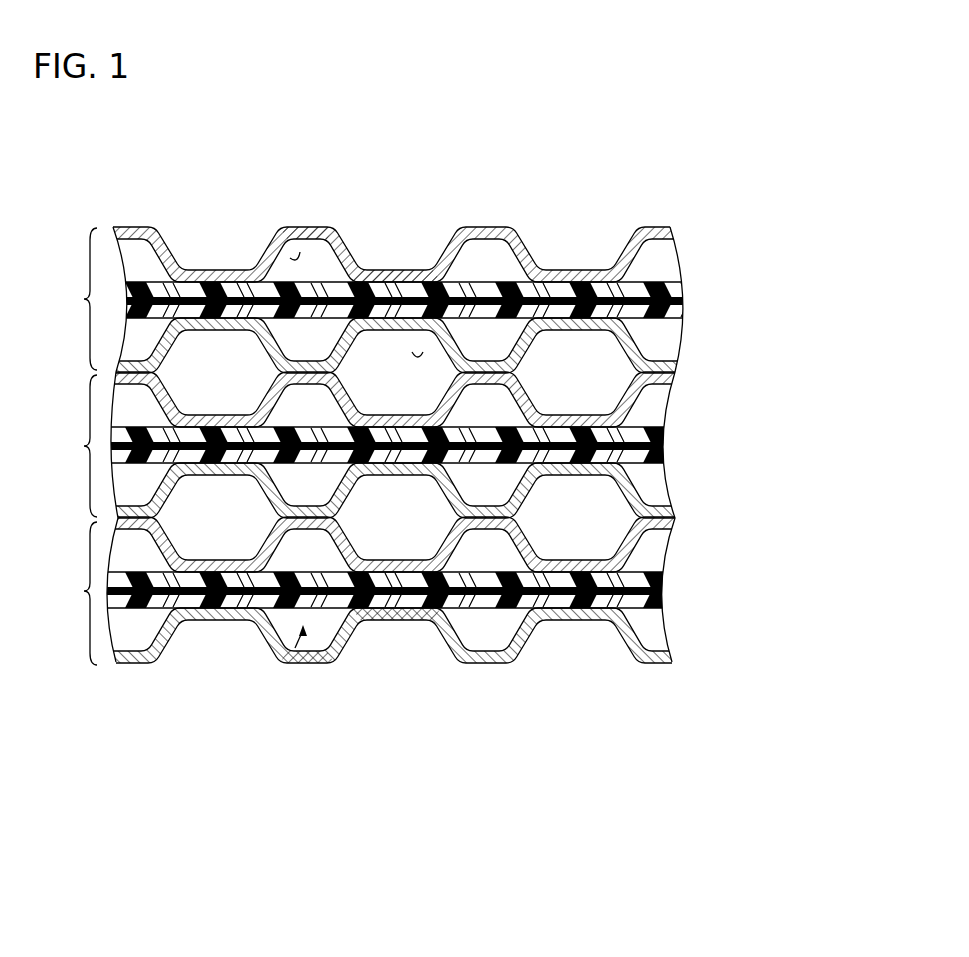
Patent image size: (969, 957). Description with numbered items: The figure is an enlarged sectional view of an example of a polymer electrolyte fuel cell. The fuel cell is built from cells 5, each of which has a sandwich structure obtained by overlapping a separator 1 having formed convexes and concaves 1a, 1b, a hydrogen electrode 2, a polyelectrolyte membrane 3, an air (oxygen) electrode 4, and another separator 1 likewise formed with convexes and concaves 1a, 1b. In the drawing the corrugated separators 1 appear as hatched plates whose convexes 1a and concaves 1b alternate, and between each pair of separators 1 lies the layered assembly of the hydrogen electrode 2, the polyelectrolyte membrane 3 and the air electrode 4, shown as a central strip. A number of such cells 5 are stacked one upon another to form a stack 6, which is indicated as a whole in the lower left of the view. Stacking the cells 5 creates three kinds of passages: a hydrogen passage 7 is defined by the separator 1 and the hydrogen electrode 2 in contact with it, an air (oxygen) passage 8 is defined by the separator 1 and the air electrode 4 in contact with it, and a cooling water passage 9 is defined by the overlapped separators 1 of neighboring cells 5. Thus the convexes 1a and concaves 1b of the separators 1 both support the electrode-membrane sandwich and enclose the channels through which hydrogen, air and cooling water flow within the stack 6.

The separator 1 is at (682, 228).
The convex 1a is at (310, 228).
The concave 1b is at (388, 270).
The hydrogen electrode 2 is at (671, 290).
The polyelectrolyte membrane 3 is at (683, 296).
The air electrode 4 is at (676, 312).
The cell 5 is at (79, 446).
The stack 6 is at (128, 696).
The hydrogen passage 7 is at (290, 258).
The air passage 8 is at (280, 667).
The cooling water passage 9 is at (423, 352).